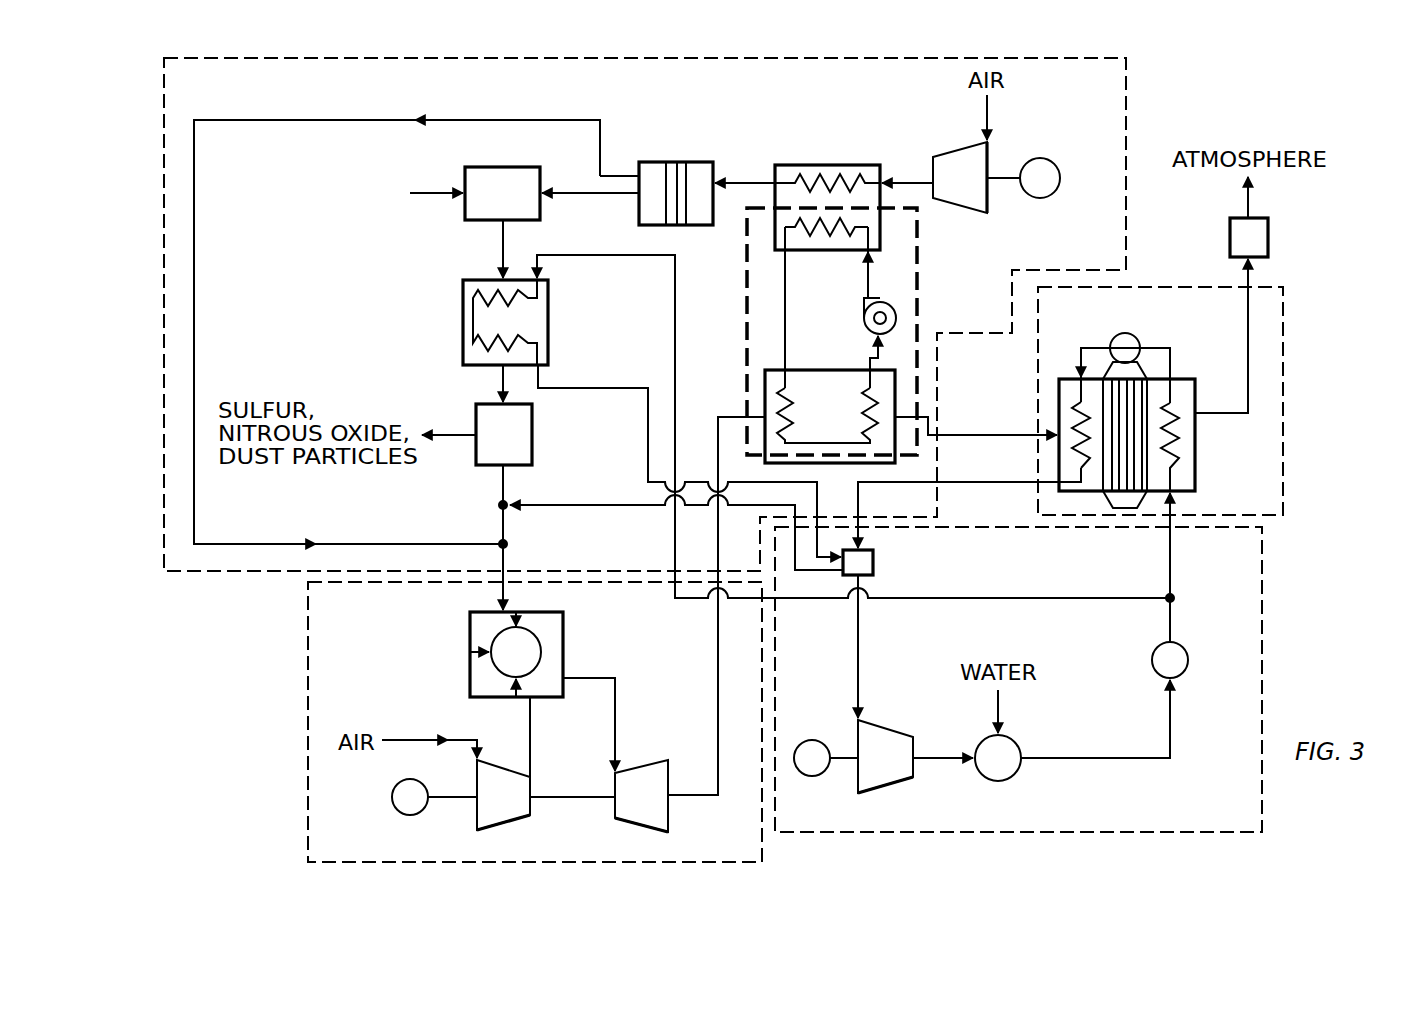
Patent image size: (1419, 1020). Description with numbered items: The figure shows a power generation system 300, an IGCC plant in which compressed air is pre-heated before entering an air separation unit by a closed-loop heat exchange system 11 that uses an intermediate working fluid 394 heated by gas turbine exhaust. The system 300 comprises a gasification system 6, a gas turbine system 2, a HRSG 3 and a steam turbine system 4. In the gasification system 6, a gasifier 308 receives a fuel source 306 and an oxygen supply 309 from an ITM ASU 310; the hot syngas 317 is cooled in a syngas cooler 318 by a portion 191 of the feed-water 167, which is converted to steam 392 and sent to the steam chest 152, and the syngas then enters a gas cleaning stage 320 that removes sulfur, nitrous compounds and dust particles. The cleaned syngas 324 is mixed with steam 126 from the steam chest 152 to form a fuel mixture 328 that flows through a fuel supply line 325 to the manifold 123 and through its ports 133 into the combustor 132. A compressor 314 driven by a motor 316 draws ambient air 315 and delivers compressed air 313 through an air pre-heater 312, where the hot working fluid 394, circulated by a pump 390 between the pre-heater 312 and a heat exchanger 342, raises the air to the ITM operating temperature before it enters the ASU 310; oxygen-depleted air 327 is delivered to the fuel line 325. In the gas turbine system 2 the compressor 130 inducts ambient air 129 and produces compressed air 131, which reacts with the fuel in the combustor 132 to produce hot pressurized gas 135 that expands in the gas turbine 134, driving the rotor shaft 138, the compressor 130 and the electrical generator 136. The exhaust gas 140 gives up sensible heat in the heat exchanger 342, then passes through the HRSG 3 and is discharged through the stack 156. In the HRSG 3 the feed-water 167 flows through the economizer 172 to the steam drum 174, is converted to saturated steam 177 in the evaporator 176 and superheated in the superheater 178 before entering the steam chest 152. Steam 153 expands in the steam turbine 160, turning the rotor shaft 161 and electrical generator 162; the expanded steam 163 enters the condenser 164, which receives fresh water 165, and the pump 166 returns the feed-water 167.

The power generation system 300 is at (1313, 109).
The gasification system 6 is at (1128, 100).
The gas turbine system 2 is at (308, 650).
The heat recovery steam generator 3 is at (1285, 348).
The steam turbine system 4 is at (1265, 588).
The heat exchange system 11 is at (918, 272).
The fuel source 306 is at (412, 194).
The gasifier 308 is at (505, 167).
The oxygen supply 309 is at (612, 232).
The ITM ASU 310 is at (700, 162).
The air pre-heater 312 is at (818, 165).
The compressed air 313 is at (733, 171).
The compressor 314 is at (948, 207).
The ambient air 315 is at (996, 122).
The motor 316 is at (1040, 200).
The hot syngas 317 is at (488, 263).
The syngas cooler 318 is at (463, 322).
The gas cleaning stage 320 is at (533, 425).
The cleaned syngas 324 is at (488, 497).
The fuel supply line 325 is at (500, 541).
The oxygen-depleted air 327 is at (283, 535).
The fuel mixture 328 is at (513, 522).
The steam 126 is at (543, 497).
The steam 392 is at (640, 378).
The working fluid 394 is at (858, 266).
The pump 390 is at (896, 310).
The heat exchanger 342 is at (765, 380).
The exhaust gas 140 is at (1021, 425).
The stack 156 is at (1269, 235).
The economizer 172 is at (1195, 430).
The steam drum 174 is at (1125, 333).
The evaporator 176 is at (1103, 473).
The superheater 178 is at (1068, 415).
The saturated steam 177 is at (1092, 318).
The steam chest 152 is at (874, 565).
The cooling water 191 is at (951, 590).
The manifold 123 is at (470, 622).
The combustor 132 is at (541, 636).
The ports 133 is at (547, 652).
The hot pressurized gas 135 is at (626, 712).
The ambient air 129 is at (424, 731).
The compressed air 131 is at (544, 742).
The electrical generator 136 is at (393, 788).
The compressor 130 is at (477, 822).
The rotor shaft 138 is at (566, 800).
The gas turbine 134 is at (670, 820).
The steam 153 is at (870, 655).
The steam turbine 160 is at (880, 787).
The electrical generator 162 is at (828, 748).
The rotor shaft 161 is at (845, 765).
The expanded steam 163 is at (956, 747).
The condenser 164 is at (1012, 776).
The fresh water 165 is at (1000, 708).
The pump 166 is at (1156, 645).
The feed-water 167 is at (1183, 610).